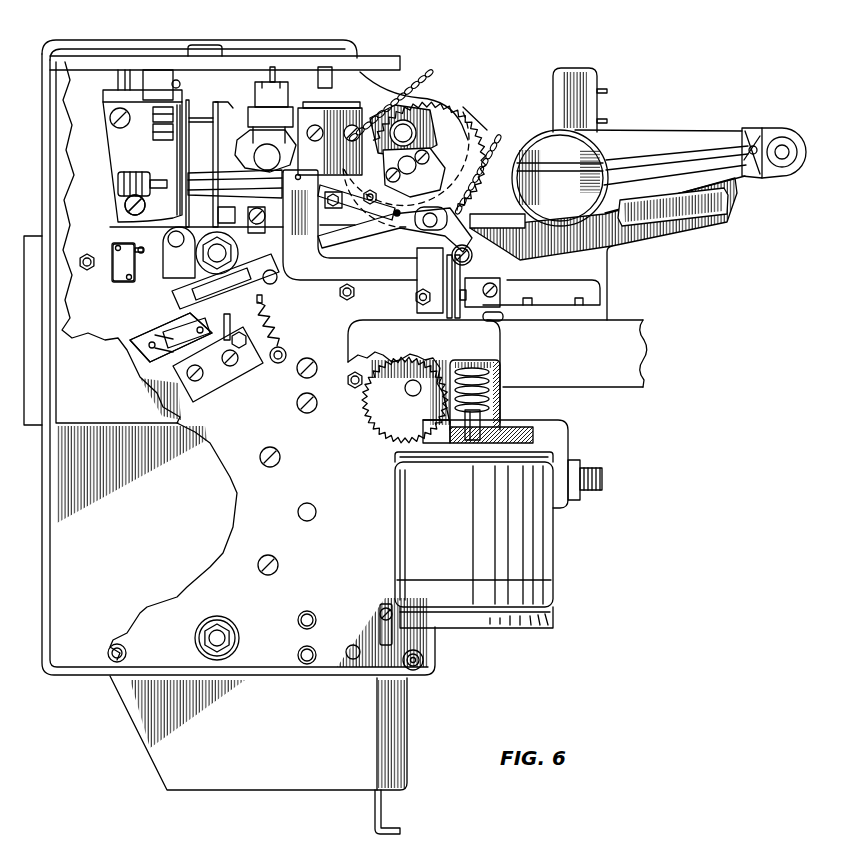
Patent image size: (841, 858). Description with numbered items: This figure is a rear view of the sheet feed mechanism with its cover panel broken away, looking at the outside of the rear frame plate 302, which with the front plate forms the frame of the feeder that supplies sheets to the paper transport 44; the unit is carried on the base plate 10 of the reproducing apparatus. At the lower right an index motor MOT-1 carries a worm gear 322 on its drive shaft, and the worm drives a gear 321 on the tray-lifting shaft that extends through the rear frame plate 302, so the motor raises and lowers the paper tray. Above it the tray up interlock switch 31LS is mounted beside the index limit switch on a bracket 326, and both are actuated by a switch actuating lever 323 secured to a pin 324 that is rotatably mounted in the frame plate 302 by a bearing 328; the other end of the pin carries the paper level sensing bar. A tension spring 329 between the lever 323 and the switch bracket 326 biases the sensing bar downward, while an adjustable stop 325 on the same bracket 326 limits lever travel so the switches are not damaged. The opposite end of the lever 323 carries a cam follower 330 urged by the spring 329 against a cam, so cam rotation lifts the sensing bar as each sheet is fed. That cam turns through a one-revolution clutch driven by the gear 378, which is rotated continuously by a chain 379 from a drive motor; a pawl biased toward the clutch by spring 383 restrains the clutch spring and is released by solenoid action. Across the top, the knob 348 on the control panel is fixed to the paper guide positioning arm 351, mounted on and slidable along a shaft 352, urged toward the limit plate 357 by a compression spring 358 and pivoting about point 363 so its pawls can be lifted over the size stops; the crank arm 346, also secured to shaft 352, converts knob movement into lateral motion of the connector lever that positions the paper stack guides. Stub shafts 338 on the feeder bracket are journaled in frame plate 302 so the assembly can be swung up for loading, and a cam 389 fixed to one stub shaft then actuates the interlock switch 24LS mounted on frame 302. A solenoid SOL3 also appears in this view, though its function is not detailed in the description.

The rear frame plate 302 is at (140, 665).
The knob 348 is at (207, 20).
The paper guide positioning arm 351 is at (160, 138).
The limit plate 357 is at (177, 156).
The compression spring 358 is at (116, 184).
The shaft 352 is at (122, 197).
The pivot point 363 is at (160, 227).
The gear 378 is at (464, 121).
The chain 379 is at (433, 75).
The spring 383 is at (369, 294).
The cam follower 330 is at (481, 255).
The crank arm 346 is at (472, 277).
The paper transport 44 is at (667, 122).
The solenoid SOL3 is at (598, 88).
The stub shafts 338 is at (112, 248).
The interlock switch 24LS is at (112, 282).
The cam 389 is at (178, 282).
The switch actuating lever 323 is at (178, 308).
The pin 324 is at (265, 305).
The bearing 328 is at (278, 337).
The tension spring 329 is at (272, 362).
The bracket 326 is at (230, 385).
The adjustable stop 325 is at (205, 318).
The tray up interlock switch 31LS is at (130, 362).
The base plate 10 is at (647, 352).
The gear 321 is at (390, 430).
The worm gear 322 is at (493, 394).
The index motor MOT-1 is at (555, 555).